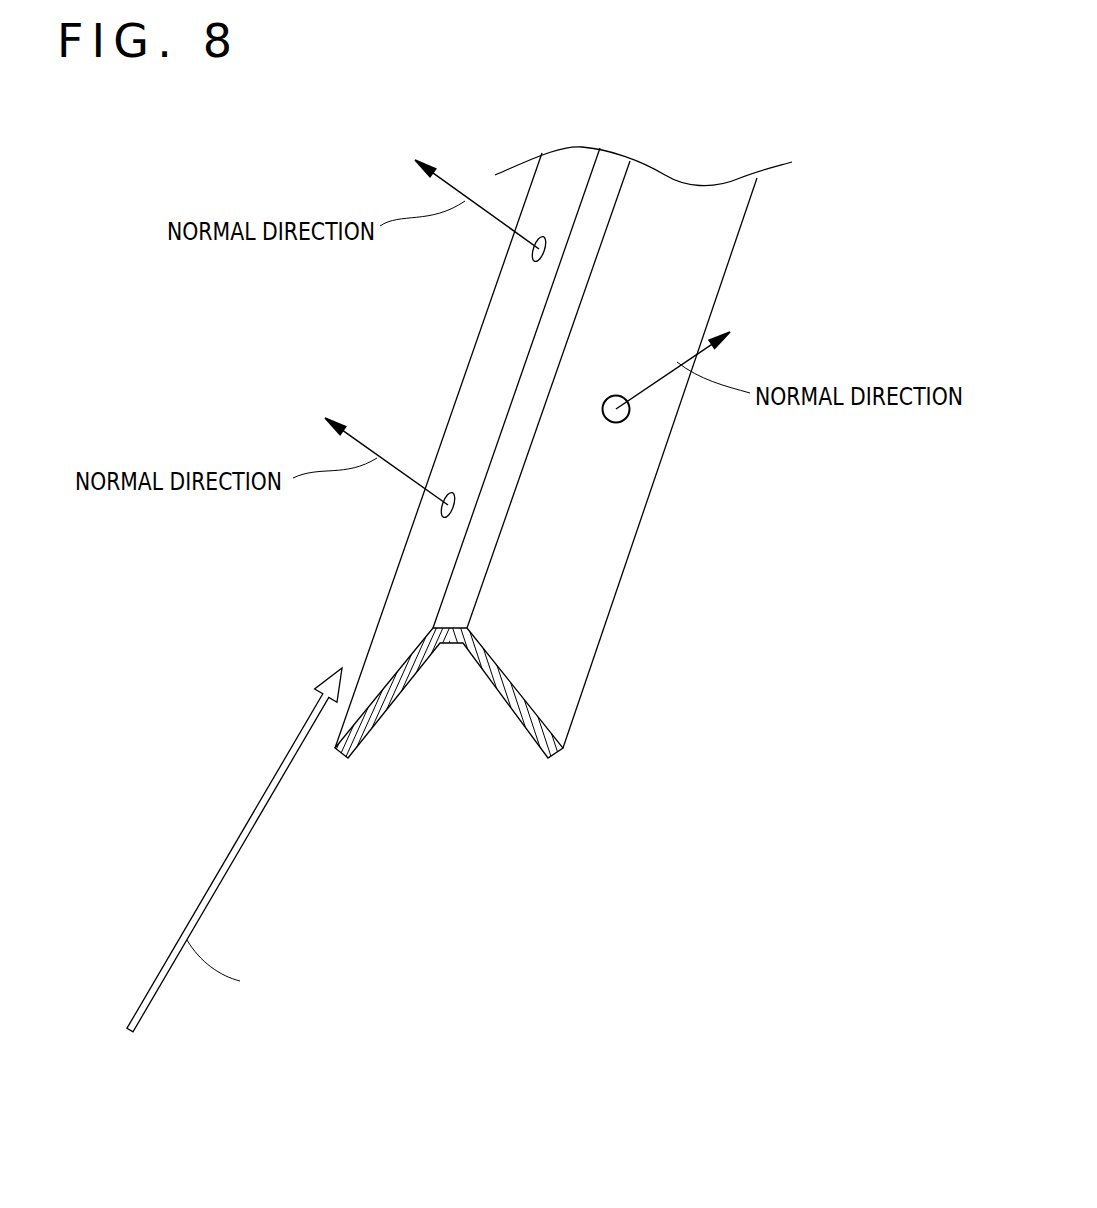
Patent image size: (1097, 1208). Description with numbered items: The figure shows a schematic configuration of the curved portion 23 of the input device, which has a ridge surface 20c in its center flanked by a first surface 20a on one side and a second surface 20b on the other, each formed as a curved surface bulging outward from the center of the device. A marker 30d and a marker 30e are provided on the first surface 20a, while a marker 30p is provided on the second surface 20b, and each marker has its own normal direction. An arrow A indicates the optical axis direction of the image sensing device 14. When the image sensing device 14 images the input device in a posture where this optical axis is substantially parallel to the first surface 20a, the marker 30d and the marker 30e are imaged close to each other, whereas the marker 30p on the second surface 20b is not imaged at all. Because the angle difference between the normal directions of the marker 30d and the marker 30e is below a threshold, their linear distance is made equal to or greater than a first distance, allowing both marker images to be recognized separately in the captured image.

The image sensing device 14 is at (474, 865).
The bent plate member 23 is at (545, 832).
The first surface 20a is at (482, 349).
The second surface 20b is at (598, 583).
The ridge surface 20c is at (606, 163).
The marker 30d is at (528, 254).
The marker 30e is at (438, 513).
The marker 30p is at (628, 414).